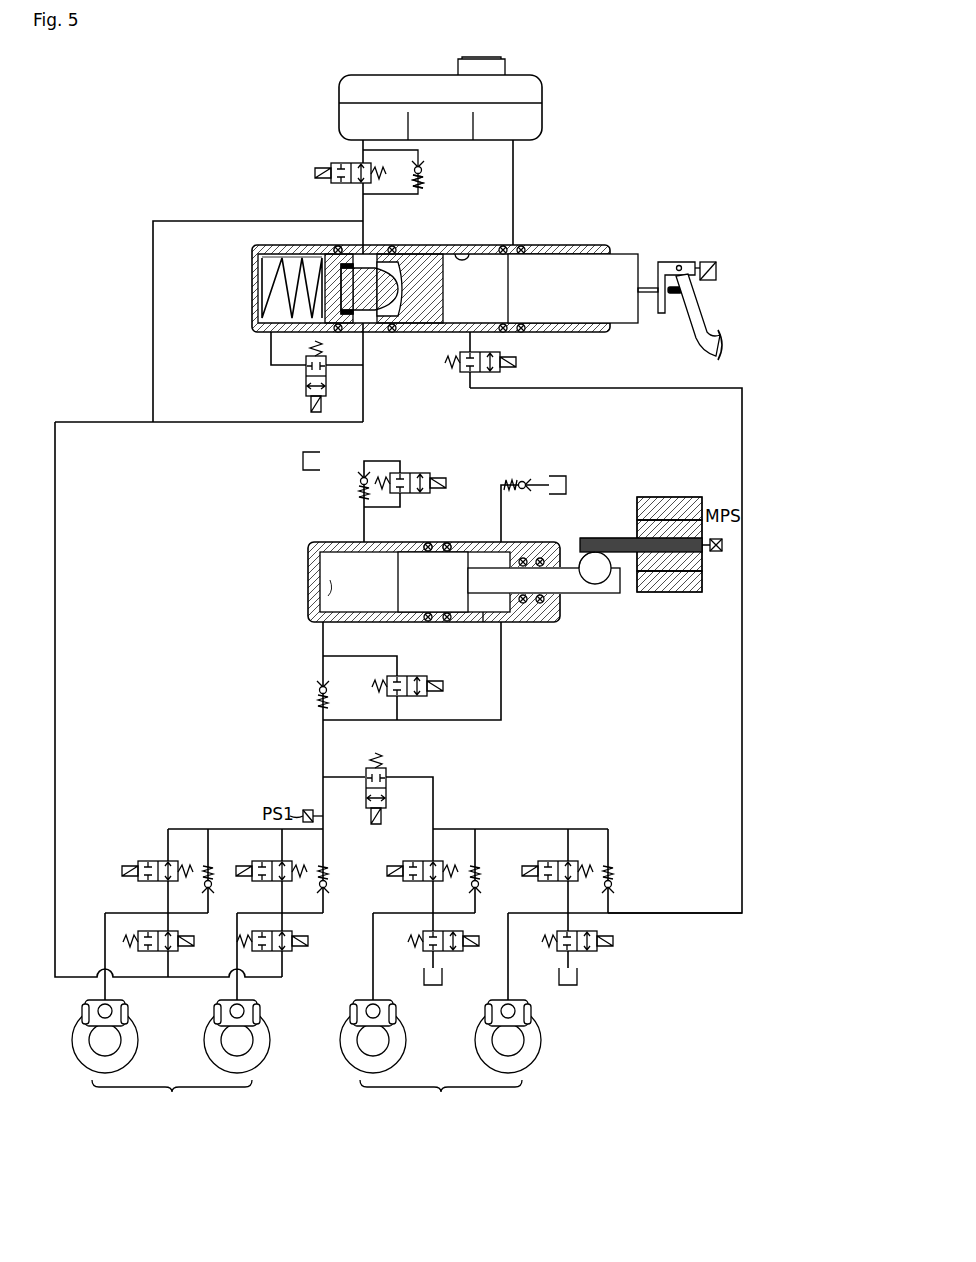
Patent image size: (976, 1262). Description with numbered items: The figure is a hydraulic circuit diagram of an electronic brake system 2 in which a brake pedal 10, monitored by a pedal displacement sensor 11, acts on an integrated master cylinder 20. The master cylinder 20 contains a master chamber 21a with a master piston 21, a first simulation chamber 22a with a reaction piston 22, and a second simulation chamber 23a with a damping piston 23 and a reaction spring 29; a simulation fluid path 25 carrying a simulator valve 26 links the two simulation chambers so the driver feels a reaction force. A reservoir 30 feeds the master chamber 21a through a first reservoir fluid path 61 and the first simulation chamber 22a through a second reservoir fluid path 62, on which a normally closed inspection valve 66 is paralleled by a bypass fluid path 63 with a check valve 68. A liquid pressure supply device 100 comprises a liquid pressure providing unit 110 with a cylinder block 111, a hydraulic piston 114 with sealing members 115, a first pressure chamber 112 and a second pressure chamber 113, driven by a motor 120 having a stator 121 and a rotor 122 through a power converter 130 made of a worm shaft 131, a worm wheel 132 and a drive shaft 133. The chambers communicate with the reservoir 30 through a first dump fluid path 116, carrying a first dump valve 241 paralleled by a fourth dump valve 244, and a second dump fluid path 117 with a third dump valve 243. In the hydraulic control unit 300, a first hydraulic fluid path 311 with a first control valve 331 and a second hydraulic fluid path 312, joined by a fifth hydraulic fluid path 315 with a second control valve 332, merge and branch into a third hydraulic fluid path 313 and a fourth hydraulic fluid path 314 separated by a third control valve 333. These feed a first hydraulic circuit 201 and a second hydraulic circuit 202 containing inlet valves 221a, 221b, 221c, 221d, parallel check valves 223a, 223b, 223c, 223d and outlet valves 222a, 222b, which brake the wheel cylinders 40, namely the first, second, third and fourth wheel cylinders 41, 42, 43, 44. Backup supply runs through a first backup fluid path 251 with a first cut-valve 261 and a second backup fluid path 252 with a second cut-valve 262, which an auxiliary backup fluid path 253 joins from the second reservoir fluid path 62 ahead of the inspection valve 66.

The electronic brake system 2 is at (273, 83).
The brake pedal 10 is at (696, 318).
The pedal displacement sensor 11 is at (718, 272).
The integrated master cylinder 20 is at (252, 262).
The master piston 21 is at (628, 253).
The master chamber 21a is at (458, 250).
The reaction piston 22 is at (417, 318).
The first simulation chamber 22a is at (338, 247).
The damping piston 23 is at (349, 330).
The second simulation chamber 23a is at (285, 256).
The simulation fluid path 25 is at (271, 350).
The simulator valve 26 is at (305, 383).
The reaction spring 29 is at (268, 295).
The reservoir 30 is at (339, 110).
The wheel cylinder 40 is at (616, 1115).
The first wheel cylinder 41 is at (515, 1003).
The second wheel cylinder 42 is at (380, 1003).
The third wheel cylinder 43 is at (263, 1044).
The fourth wheel cylinder 44 is at (130, 1044).
The first reservoir fluid path 61 is at (514, 222).
The second reservoir fluid path 62 is at (365, 210).
The bypass fluid path 63 is at (421, 153).
The inspection valve 66 is at (330, 165).
The check valve 68 is at (424, 182).
The liquid pressure supply device 100 is at (292, 514).
The liquid pressure providing unit 110 is at (286, 546).
The cylinder block 111 is at (309, 578).
The first pressure chamber 112 is at (328, 588).
The second pressure chamber 113 is at (484, 620).
The hydraulic piston 114 is at (456, 552).
The sealing members 115 is at (430, 542).
The first dump fluid path 116 is at (366, 535).
The second dump fluid path 117 is at (501, 537).
The motor 120 is at (668, 488).
The stator 121 is at (679, 587).
The rotor 122 is at (697, 562).
The power converter 130 is at (616, 516).
The worm shaft 131 is at (598, 537).
The worm wheel 132 is at (606, 582).
The drive shaft 133 is at (584, 596).
The first hydraulic circuit 201 is at (441, 1095).
The second hydraulic circuit 202 is at (172, 1095).
The first inlet valve 221a is at (548, 860).
The second inlet valve 221b is at (413, 860).
The third inlet valve 221c is at (262, 860).
The fourth inlet valve 221d is at (147, 860).
The first outlet valve 222a is at (594, 954).
The second outlet valve 222b is at (461, 954).
The first check valve 223a is at (614, 884).
The second check valve 223b is at (481, 884).
The third check valve 223c is at (329, 884).
The fourth check valve 223d is at (214, 884).
The first dump valve 241 is at (358, 488).
The third dump valve 243 is at (520, 479).
The fourth dump valve 244 is at (418, 473).
The first backup fluid path 251 is at (742, 692).
The second backup fluid path 252 is at (56, 676).
The auxiliary backup fluid path 253 is at (153, 362).
The first cut-valve 261 is at (499, 357).
The second cut-valve 262 is at (178, 953).
The hydraulic control unit 300 is at (323, 1079).
The first hydraulic fluid path 311 is at (322, 636).
The second hydraulic fluid path 312 is at (503, 686).
The third hydraulic fluid path 313 is at (434, 786).
The fourth hydraulic fluid path 314 is at (322, 782).
The fifth hydraulic fluid path 315 is at (370, 656).
The first control valve 331 is at (318, 693).
The second control valve 332 is at (443, 688).
The third control valve 333 is at (378, 767).